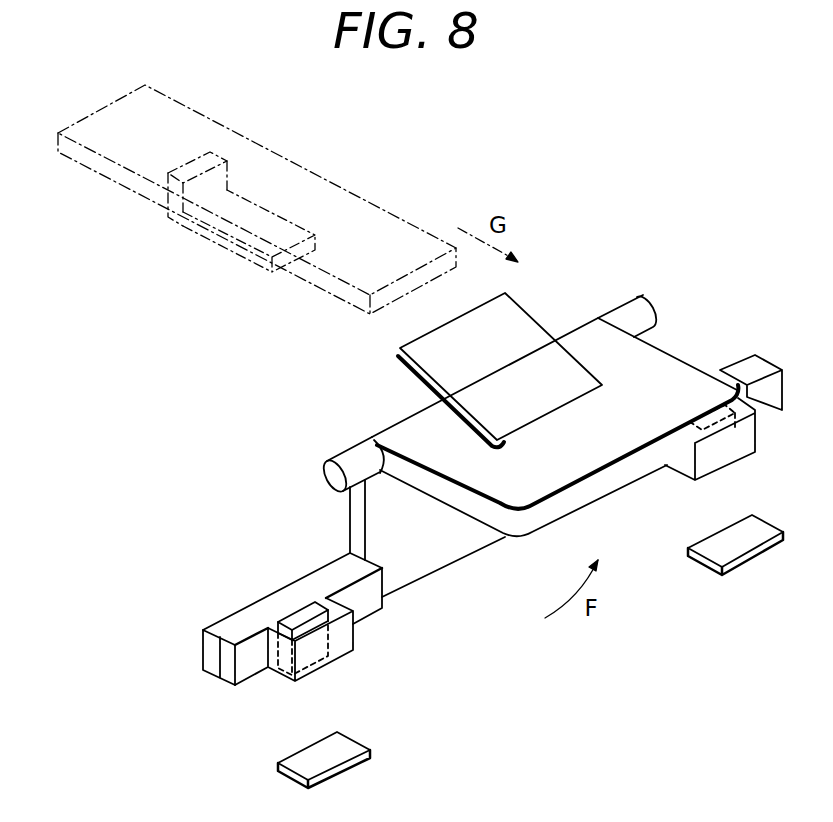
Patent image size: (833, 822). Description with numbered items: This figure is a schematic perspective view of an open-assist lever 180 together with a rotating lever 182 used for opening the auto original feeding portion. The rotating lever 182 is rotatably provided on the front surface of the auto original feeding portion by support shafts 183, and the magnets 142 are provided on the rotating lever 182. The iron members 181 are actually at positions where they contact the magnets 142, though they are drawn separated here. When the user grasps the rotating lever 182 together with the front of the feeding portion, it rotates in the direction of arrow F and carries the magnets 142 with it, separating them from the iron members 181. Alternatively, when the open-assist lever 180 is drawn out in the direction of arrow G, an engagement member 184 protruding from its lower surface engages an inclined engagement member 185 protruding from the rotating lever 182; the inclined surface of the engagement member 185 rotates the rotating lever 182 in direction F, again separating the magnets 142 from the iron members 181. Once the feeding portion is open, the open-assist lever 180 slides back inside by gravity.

The open-assist lever 180 is at (331, 193).
The engagement member 184 is at (181, 225).
The engagement member 185 is at (523, 315).
The support shaft 183 is at (642, 317).
The rotating lever 182 is at (404, 432).
The magnet 142 is at (353, 636).
The iron member 181 is at (743, 543).